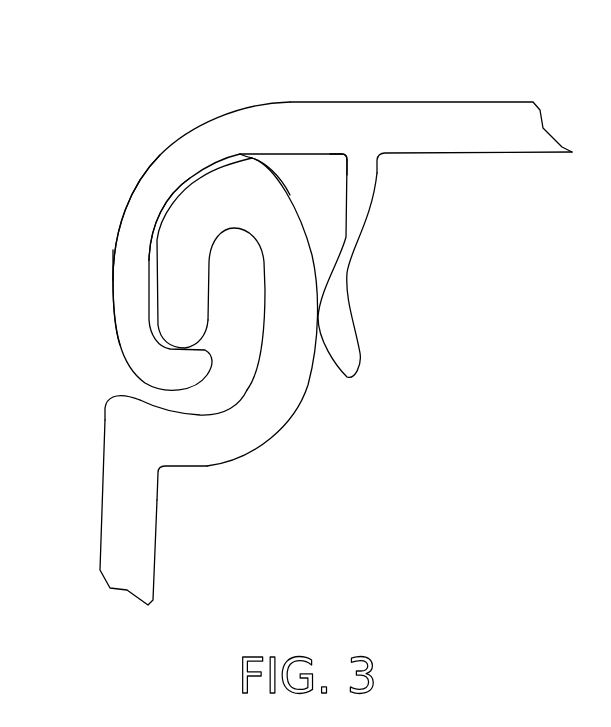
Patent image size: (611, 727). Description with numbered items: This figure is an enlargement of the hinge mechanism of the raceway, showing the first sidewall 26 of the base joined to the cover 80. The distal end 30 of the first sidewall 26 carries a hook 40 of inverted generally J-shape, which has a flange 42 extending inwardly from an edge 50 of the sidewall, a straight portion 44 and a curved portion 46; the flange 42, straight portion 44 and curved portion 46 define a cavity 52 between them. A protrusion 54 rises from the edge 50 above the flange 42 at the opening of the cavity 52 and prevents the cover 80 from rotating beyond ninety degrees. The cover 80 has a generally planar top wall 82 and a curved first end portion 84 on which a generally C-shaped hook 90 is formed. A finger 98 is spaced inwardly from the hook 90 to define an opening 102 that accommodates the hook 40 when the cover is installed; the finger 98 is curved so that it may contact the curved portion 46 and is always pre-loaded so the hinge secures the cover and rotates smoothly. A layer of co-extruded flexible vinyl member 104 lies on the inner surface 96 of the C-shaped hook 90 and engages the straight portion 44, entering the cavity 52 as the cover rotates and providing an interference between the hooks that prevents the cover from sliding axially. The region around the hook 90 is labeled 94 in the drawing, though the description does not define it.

The first sidewall 26 is at (128, 535).
The distal end 30 is at (150, 248).
The hook 40 is at (240, 174).
The flange 42 is at (177, 450).
The straight portion 44 is at (180, 220).
The curved portion 46 is at (283, 393).
The edge 50 is at (127, 413).
The cavity 52 is at (237, 254).
The protrusion 54 is at (137, 403).
The cover 80 is at (503, 101).
The top wall 82 is at (467, 137).
The first end portion 84 is at (165, 152).
The hook 90 is at (127, 290).
The curved portion 94 is at (147, 170).
The inner surface 96 is at (242, 155).
The finger 98 is at (342, 332).
The opening 102 is at (323, 160).
The flexible member 104 is at (203, 177).